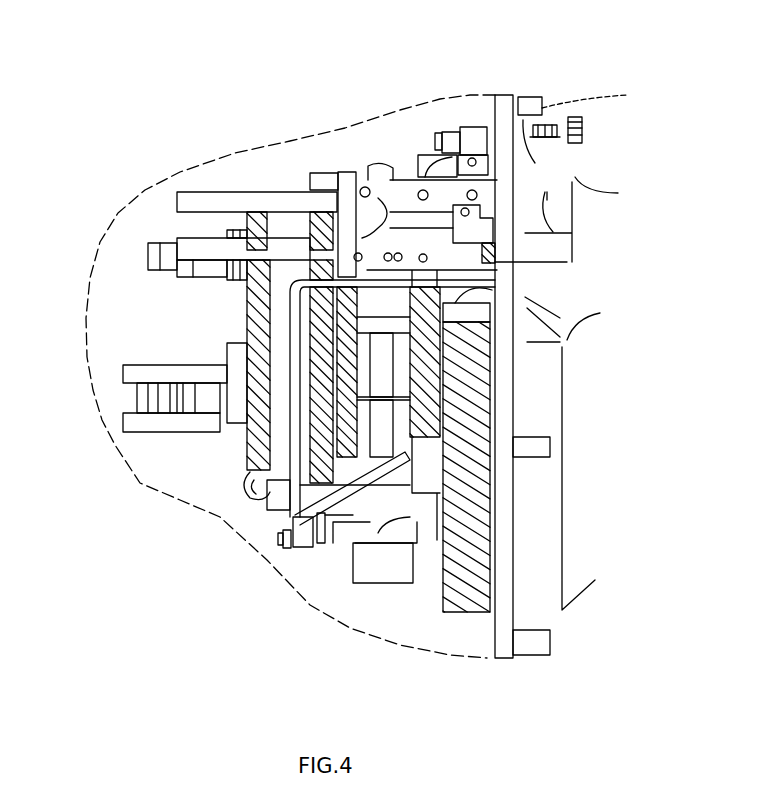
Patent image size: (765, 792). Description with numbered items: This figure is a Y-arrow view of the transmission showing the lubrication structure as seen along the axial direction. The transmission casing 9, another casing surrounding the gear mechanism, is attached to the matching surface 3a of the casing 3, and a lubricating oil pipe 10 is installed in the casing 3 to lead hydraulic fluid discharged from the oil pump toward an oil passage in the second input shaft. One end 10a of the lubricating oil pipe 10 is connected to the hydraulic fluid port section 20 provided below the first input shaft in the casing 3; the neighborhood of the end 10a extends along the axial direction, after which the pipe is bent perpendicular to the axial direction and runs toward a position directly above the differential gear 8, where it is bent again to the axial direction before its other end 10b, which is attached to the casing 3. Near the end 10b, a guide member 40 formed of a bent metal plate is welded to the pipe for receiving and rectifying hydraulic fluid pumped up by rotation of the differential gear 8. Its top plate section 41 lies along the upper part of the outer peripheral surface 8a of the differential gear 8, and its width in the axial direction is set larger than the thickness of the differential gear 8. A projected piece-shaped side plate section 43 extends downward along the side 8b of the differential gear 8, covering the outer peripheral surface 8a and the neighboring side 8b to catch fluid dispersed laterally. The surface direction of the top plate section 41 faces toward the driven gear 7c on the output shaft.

The casing 3 is at (554, 90).
The matching surface of the casing 3a is at (486, 88).
The driven gear 7c is at (497, 410).
The differential gear 8 is at (490, 468).
The outer peripheral surface of the differential gear 8a is at (513, 328).
The side of the differential gear 8b is at (485, 381).
The transmission casing 9 is at (306, 135).
The lubricating oil pipe 10 is at (247, 445).
The one end of the lubricating oil pipe 10a is at (293, 522).
The other end of the lubricating oil pipe 10b is at (547, 263).
The hydraulic fluid port section 20 is at (326, 542).
The guide member 40 is at (565, 318).
The top plate section 41 is at (513, 286).
The side plate section 43 is at (300, 310).